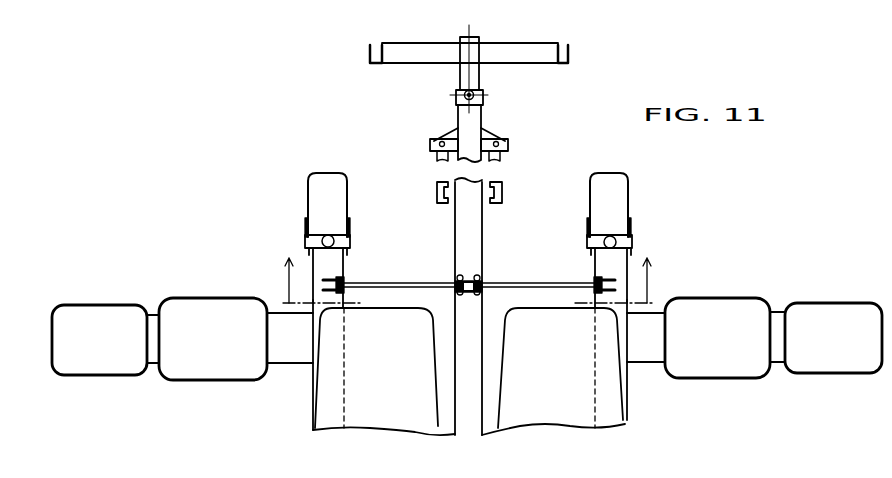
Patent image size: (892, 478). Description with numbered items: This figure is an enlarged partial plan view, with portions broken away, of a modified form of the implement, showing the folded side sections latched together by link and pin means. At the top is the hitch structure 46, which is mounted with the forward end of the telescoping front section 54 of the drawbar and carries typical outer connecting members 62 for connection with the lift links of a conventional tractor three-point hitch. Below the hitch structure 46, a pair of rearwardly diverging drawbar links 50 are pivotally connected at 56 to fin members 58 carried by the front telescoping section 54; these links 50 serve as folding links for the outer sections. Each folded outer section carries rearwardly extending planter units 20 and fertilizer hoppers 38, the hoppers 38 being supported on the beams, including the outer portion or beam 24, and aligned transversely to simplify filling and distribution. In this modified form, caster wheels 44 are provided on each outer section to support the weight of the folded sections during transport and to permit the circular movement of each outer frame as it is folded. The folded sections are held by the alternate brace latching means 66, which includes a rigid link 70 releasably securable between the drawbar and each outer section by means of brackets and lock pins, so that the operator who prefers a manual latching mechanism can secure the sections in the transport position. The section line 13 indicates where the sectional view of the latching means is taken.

The hitch structure 46 is at (492, 47).
The outer connecting members 62 is at (370, 50).
The fin members 58 is at (452, 130).
The pivotal connection 56 is at (430, 139).
The caster wheels 44 is at (321, 176).
The drawbar links 50 is at (437, 192).
The telescoping front section 54 is at (482, 233).
The brace latching means 66 is at (500, 268).
The rigid link 70 is at (423, 285).
The outer portion 24 is at (343, 268).
The section line 13- 13 is at (467, 266).
The planter units 20 is at (116, 386).
The fertilizer hoppers 38 is at (407, 432).